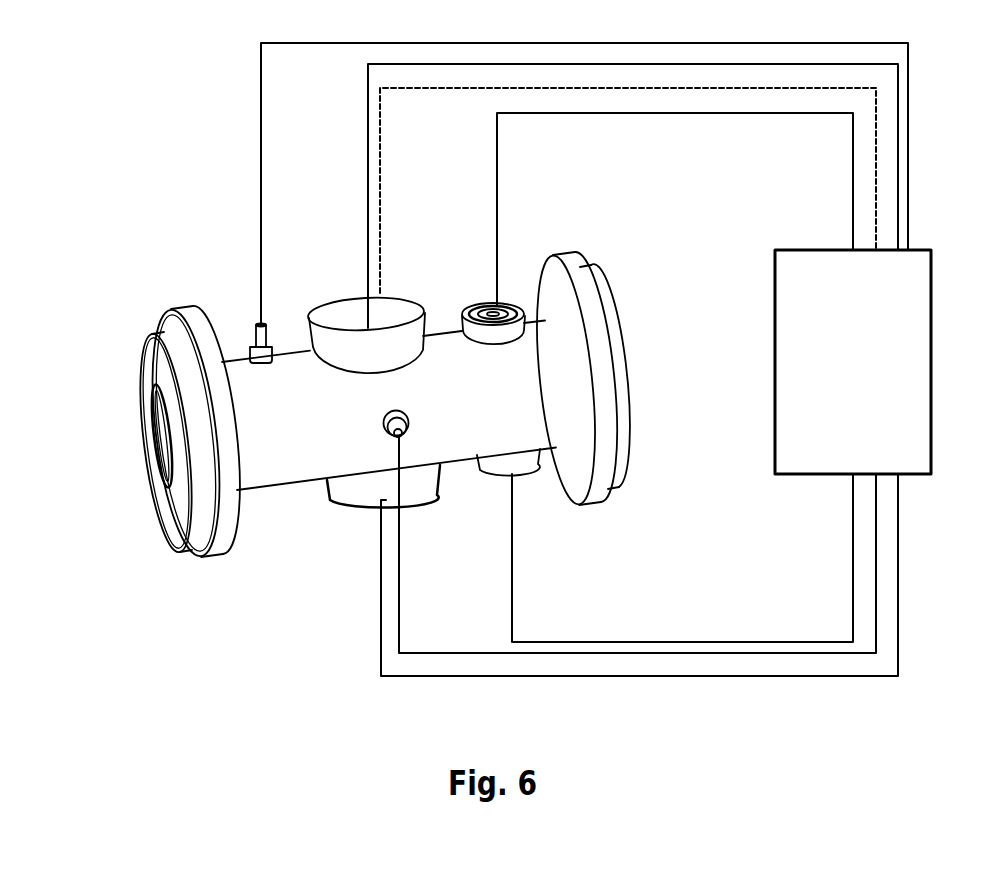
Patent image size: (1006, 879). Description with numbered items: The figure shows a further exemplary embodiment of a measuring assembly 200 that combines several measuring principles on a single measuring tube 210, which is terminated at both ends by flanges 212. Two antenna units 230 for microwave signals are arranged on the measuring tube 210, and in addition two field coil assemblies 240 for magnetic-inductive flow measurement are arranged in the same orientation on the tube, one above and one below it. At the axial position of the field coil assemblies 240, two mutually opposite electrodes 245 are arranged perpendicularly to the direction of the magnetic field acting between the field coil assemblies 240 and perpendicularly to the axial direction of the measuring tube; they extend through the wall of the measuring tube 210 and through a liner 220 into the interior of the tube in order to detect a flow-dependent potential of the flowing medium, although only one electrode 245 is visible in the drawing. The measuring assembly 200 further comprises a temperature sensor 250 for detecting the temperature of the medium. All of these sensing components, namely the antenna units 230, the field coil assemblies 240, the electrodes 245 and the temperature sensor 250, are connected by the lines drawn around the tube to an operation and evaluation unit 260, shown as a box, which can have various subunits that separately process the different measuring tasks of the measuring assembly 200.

The measuring assembly 200 is at (178, 254).
The measuring tube 210 is at (295, 357).
The flange 212 is at (190, 326).
The liner 220 is at (160, 423).
The antenna unit 230 is at (487, 300).
The field coil assembly 240 is at (390, 312).
The electrode 245 is at (387, 437).
The temperature sensor 250 is at (263, 322).
The operation and evaluation unit 260 is at (917, 283).